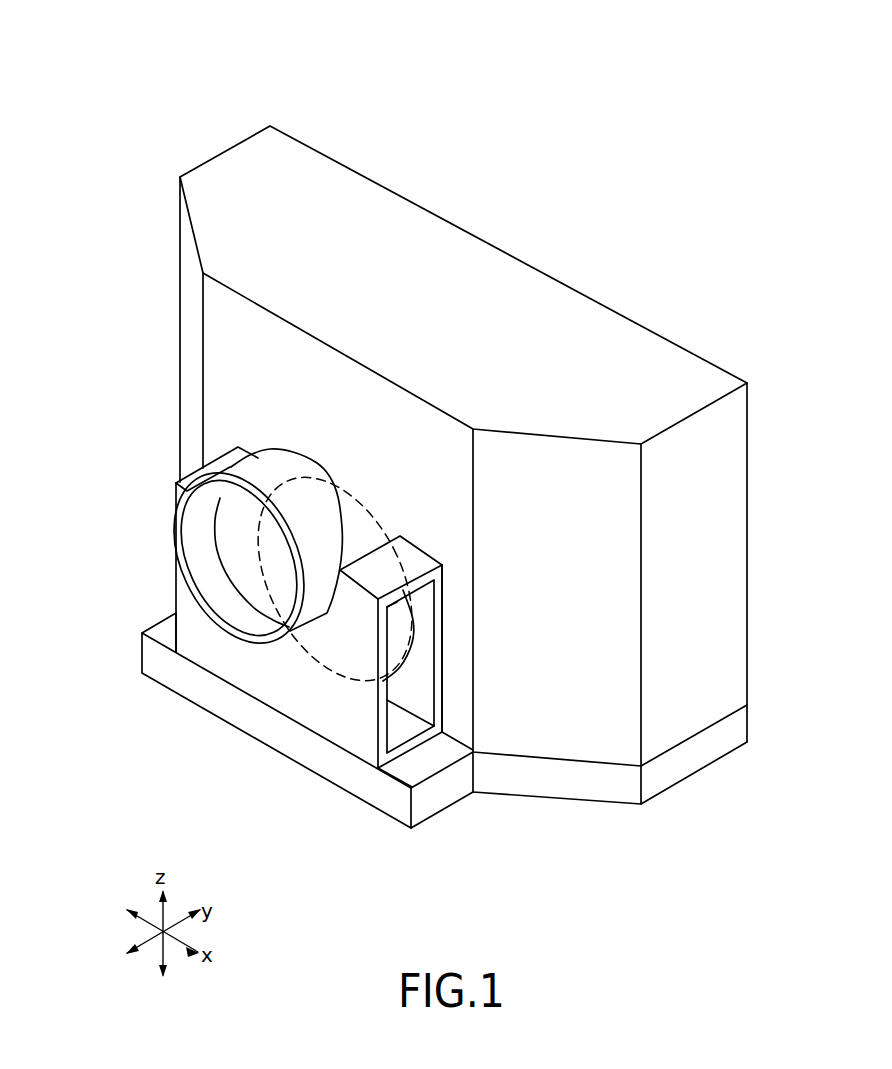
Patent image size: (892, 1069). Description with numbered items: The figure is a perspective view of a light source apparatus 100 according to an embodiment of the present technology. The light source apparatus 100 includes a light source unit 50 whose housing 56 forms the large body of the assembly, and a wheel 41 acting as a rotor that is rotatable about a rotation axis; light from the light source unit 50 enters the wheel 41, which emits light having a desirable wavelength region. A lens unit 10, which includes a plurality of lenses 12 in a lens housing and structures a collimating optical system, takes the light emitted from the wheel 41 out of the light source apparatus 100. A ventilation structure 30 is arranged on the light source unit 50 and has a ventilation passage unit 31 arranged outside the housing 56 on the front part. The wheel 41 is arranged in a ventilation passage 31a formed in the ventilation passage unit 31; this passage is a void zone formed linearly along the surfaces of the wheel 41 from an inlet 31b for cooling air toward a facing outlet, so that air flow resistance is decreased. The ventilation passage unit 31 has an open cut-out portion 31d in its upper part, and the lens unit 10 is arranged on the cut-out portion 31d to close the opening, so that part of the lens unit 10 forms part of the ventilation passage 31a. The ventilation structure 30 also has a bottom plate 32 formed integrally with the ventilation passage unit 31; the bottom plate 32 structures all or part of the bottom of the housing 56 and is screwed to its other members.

The light source apparatus 100 is at (360, 88).
The light source unit 50 is at (463, 465).
The housing 56 is at (428, 233).
The ventilation structure 30 is at (307, 744).
The bottom plate 32 is at (432, 808).
The lens unit 10 is at (216, 517).
The lens 12 is at (235, 537).
The ventilation passage unit 31 is at (388, 641).
The ventilation passage 31a is at (397, 713).
The inlet 31b is at (422, 615).
The cut-out portion 31d is at (358, 568).
The wheel 41 is at (418, 645).